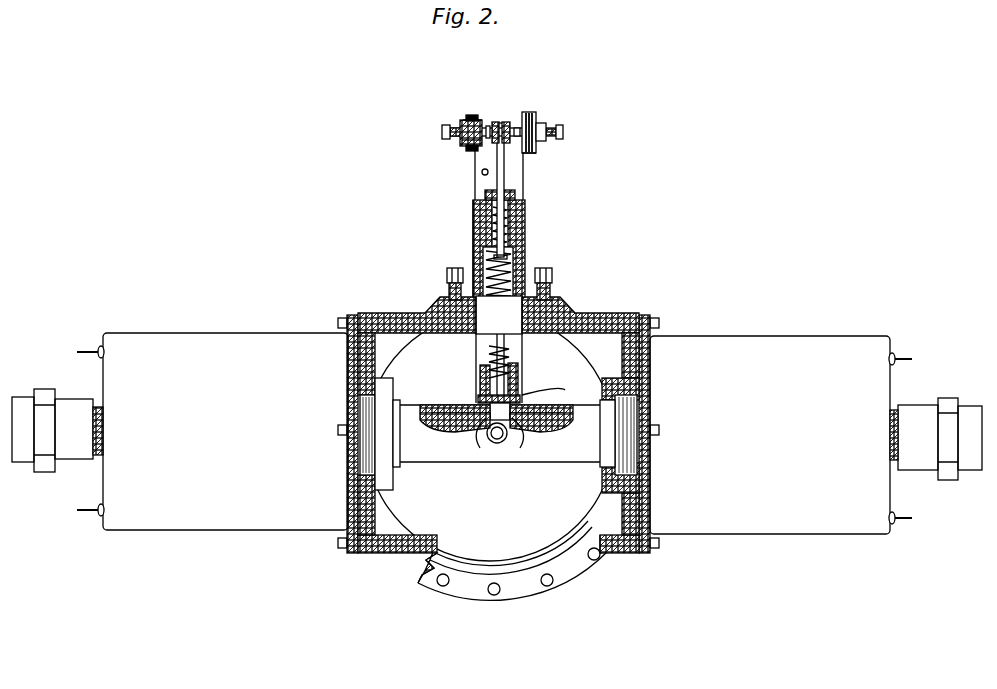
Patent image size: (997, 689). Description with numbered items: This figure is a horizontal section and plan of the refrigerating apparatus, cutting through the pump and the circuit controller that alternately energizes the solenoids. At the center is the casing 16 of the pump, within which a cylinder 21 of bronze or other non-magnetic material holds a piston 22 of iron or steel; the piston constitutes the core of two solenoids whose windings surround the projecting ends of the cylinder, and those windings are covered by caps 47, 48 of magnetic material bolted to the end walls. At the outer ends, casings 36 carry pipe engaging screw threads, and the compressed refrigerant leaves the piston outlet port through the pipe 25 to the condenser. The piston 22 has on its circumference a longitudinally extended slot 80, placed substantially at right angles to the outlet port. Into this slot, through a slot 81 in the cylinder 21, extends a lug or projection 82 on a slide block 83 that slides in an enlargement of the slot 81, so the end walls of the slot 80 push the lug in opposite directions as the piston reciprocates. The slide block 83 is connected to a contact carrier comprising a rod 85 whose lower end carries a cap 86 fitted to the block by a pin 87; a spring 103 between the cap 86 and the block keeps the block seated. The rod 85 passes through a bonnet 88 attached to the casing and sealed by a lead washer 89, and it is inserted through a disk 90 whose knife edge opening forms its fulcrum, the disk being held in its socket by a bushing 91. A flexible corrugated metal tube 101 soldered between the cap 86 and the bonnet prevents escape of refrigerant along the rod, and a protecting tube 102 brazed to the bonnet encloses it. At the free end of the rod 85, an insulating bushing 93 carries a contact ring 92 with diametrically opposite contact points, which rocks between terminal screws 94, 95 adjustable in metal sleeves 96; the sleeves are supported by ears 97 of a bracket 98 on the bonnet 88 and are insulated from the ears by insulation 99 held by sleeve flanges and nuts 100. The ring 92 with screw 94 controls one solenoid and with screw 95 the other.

The valve housing 16 is at (408, 552).
The cylinder 21 is at (443, 404).
The piston 22 is at (446, 422).
The pipe 25 is at (489, 440).
The casing 36 is at (68, 406).
The cap 47 is at (194, 339).
The cap 48 is at (744, 340).
The slot 80 is at (540, 416).
The slot 81 is at (490, 413).
The lug or projection 82 is at (511, 424).
The slide block 83 is at (521, 399).
The rod 85 is at (506, 177).
The cap 86 is at (511, 378).
The pin 87 is at (490, 406).
The bonnet 88 is at (525, 232).
The lead washer 89 is at (447, 292).
The disk 90 is at (481, 228).
The bushing 91 is at (515, 195).
The contact ring 92 is at (506, 121).
The insulating bushing 93 is at (486, 168).
The terminal screw 94 is at (442, 130).
The terminal screw 95 is at (563, 132).
The metal sleeve 96 is at (488, 124).
The lug or ear 97 is at (468, 118).
The bracket 98 is at (475, 185).
The insulation 99 is at (461, 121).
The nut 100 is at (544, 124).
The flexible corrugated metal tube 101 is at (512, 265).
The protecting tube 102 is at (478, 334).
The spring 103 is at (555, 385).